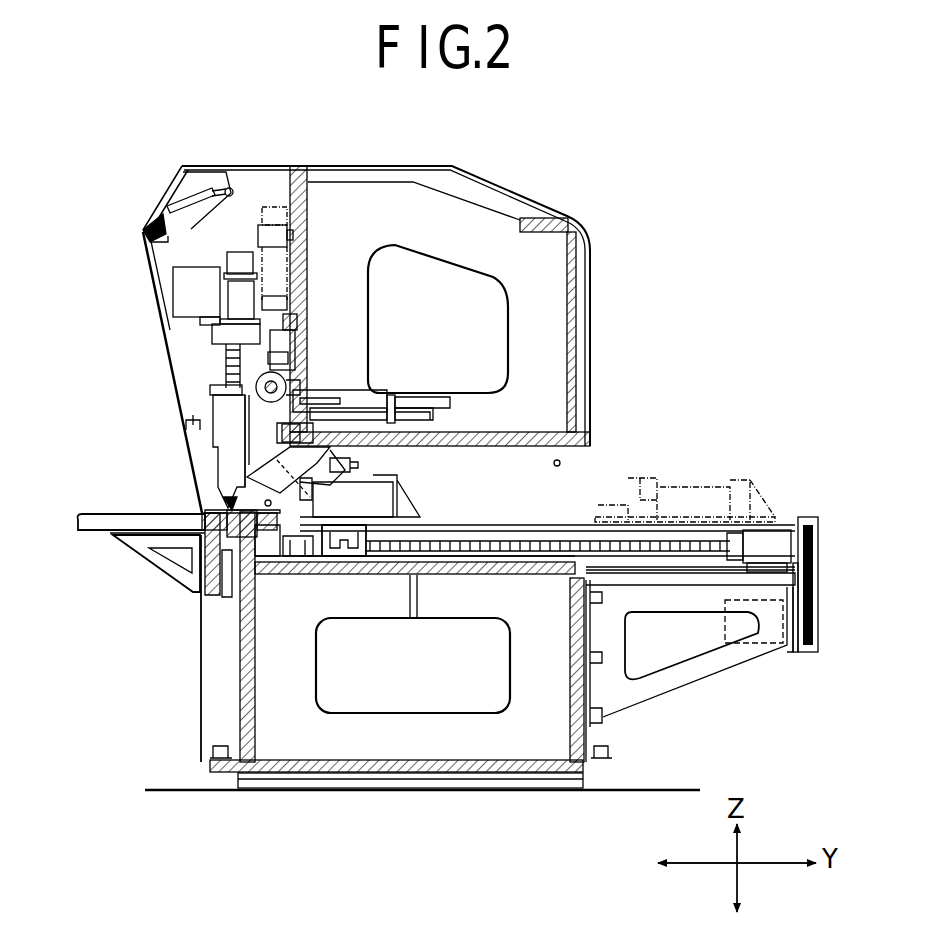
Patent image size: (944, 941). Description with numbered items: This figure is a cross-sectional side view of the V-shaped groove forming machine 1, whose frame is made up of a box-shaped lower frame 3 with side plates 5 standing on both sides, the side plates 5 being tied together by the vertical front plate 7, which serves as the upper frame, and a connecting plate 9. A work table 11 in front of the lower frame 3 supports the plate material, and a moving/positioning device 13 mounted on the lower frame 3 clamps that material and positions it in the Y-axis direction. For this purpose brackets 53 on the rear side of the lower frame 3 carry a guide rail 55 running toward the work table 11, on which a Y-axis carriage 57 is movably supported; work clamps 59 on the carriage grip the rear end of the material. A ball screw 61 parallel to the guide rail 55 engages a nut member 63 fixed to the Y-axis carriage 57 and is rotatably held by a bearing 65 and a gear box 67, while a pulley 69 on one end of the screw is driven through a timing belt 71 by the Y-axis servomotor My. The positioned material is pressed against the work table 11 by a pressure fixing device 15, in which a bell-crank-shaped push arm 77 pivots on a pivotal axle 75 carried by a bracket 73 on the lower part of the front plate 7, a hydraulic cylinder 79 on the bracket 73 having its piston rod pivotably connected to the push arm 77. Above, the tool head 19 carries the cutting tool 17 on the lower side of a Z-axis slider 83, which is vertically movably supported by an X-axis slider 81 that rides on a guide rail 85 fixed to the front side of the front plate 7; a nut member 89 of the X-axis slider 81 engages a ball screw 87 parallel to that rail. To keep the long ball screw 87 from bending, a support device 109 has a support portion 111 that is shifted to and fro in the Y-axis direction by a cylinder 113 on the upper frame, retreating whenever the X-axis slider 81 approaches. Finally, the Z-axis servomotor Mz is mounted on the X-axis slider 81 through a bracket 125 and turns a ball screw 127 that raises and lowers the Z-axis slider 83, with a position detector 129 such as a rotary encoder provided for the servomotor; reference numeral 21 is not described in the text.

The V-shaped groove forming machine 1 is at (663, 182).
The lower frame 3 is at (528, 748).
The side plates 5 is at (487, 215).
The front plate 7 is at (300, 206).
The connecting plate 9 is at (570, 402).
The work table 11 is at (150, 577).
The moving/positioning device 13 is at (777, 470).
The pressure fixing device 15 is at (212, 478).
The cutting tool 17 is at (212, 511).
The tool head 19 is at (208, 408).
The work table 21 is at (82, 513).
The brackets 53 is at (722, 668).
The guide rail 55 is at (680, 588).
The Y-axis carriage 57 is at (420, 515).
The work clamps 59 is at (607, 517).
The ball screws 61 is at (545, 560).
The nut member 63 is at (342, 560).
The bearing 65 is at (295, 560).
The gear box 67 is at (772, 540).
The pulley 69 is at (822, 538).
The timing belt 71 is at (822, 597).
The bracket 73 is at (305, 490).
The pivotal axle 75 is at (270, 560).
The push arm 77 is at (252, 503).
The hydraulic cylinder 79 is at (397, 463).
The X-axis slider 81 is at (292, 322).
The Z-axis slider 83 is at (222, 437).
The guide rail 85 is at (300, 335).
The ball screw 87 is at (300, 372).
The nut member 89 is at (305, 382).
The support devices 109 is at (405, 416).
The support portion 111 is at (280, 437).
The cylinder 113 is at (412, 398).
The bracket 125 is at (228, 345).
The ball screw 127 is at (215, 385).
The position detector 129 is at (237, 258).
The Z-axis servomotor Mz is at (225, 305).
The Y-axis servomotor My is at (760, 652).